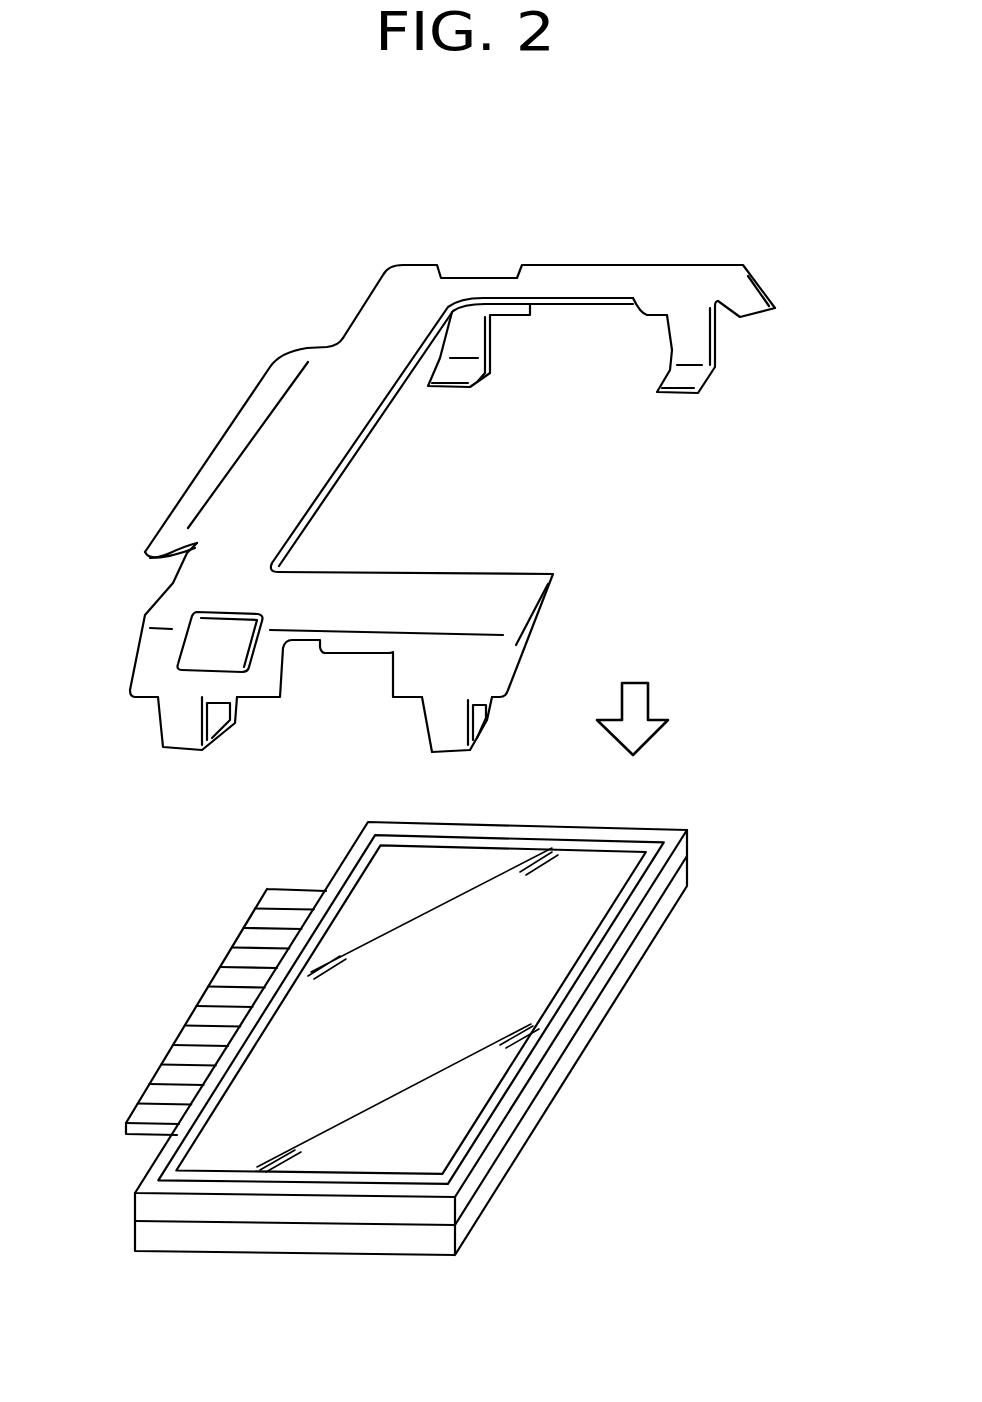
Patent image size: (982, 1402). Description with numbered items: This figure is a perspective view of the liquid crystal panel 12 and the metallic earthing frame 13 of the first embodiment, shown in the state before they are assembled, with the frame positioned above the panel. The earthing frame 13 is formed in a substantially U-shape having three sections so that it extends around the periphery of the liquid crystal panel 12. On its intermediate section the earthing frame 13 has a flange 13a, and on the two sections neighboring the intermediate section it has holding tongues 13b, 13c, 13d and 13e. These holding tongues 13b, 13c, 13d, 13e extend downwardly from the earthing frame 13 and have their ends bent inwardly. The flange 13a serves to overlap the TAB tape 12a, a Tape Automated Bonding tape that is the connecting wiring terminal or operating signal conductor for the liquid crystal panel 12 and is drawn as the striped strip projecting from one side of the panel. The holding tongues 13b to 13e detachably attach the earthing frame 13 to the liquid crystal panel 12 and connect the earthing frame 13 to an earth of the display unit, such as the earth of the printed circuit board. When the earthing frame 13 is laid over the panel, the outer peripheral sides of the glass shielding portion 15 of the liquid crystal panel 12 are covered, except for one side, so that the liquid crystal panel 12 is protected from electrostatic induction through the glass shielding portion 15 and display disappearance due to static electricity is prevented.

The earthing frame 13 is at (426, 477).
The flange 13a is at (208, 480).
The holding tongue 13b is at (182, 727).
The holding tongue 13c is at (440, 735).
The holding tongue 13d is at (447, 373).
The holding tongue 13e is at (682, 377).
The liquid crystal panel 12 is at (539, 985).
The TAB tape 12a is at (182, 1050).
The glass shielding portion 15 is at (654, 913).